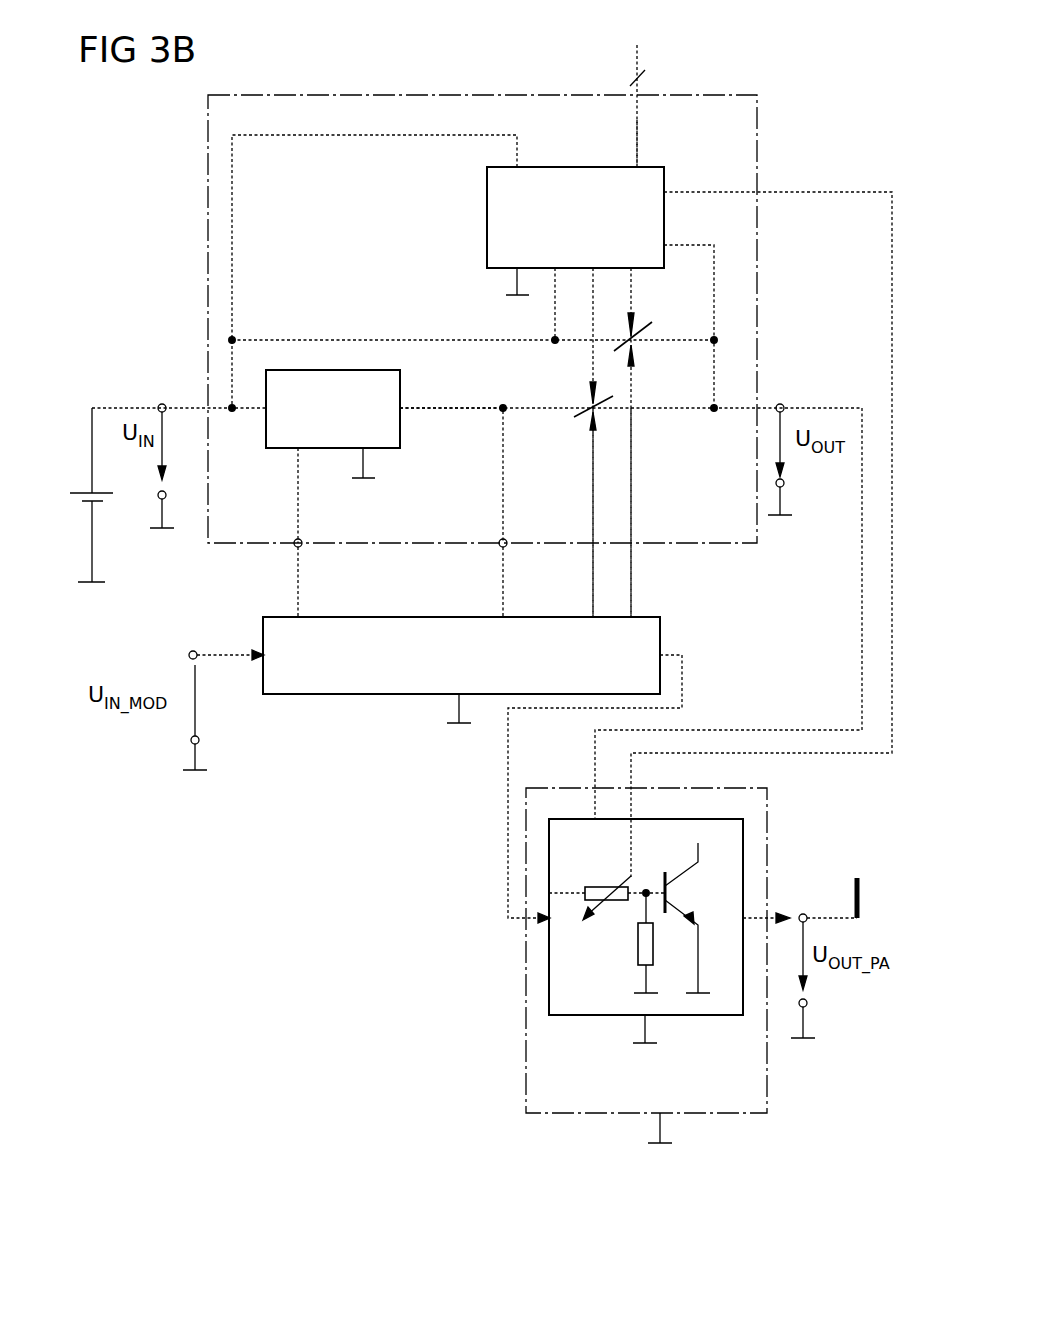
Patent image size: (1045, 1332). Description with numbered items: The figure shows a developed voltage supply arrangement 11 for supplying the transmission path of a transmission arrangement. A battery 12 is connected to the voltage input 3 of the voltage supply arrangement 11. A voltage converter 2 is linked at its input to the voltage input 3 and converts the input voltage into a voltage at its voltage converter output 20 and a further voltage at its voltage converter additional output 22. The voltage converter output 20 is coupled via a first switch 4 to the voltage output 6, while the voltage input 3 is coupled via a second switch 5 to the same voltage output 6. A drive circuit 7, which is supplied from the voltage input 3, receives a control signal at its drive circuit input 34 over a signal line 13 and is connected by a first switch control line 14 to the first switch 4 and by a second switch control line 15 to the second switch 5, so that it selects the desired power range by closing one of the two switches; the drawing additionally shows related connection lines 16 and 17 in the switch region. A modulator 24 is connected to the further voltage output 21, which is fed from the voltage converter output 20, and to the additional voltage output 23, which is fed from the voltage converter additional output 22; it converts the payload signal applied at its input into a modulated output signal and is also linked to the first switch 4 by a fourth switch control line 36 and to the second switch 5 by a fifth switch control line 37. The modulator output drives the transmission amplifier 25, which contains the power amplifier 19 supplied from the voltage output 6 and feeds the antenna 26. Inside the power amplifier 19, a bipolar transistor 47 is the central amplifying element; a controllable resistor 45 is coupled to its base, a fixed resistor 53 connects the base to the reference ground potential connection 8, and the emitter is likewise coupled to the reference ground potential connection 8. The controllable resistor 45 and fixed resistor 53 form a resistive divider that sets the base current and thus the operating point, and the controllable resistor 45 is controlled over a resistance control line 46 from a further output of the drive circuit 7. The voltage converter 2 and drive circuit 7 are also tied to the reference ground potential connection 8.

The voltage converter 2 is at (400, 388).
The voltage input 3 is at (161, 404).
The first switch 4 is at (609, 394).
The second switch 5 is at (622, 338).
The voltage output 6 is at (782, 404).
The drive circuit 7 is at (487, 222).
The reference ground potential connection 8 is at (508, 295).
The voltage supply arrangement 11 is at (441, 95).
The battery 12 is at (125, 406).
The signal line 13 is at (637, 66).
The first switch control line 14 is at (591, 372).
The second switch control line 15 is at (637, 284).
The control line 16 is at (555, 327).
The control line 17 is at (714, 305).
The power amplifier 19 is at (698, 1018).
The voltage converter output 20 is at (400, 416).
The further voltage output 21 is at (508, 548).
The voltage converter additional output 22 is at (299, 452).
The additional voltage output 23 is at (302, 548).
The modulator 24 is at (462, 614).
The transmission amplifier 25 is at (526, 1052).
The antenna 26 is at (863, 896).
The drive circuit input 34 is at (634, 164).
The fourth switch control line 36 is at (593, 479).
The fifth switch control line 37 is at (631, 480).
The controllable resistor 45 is at (607, 886).
The resistance control line 46 is at (830, 188).
The bipolar transistor 47 is at (677, 893).
The fixed resistor 53 is at (638, 944).